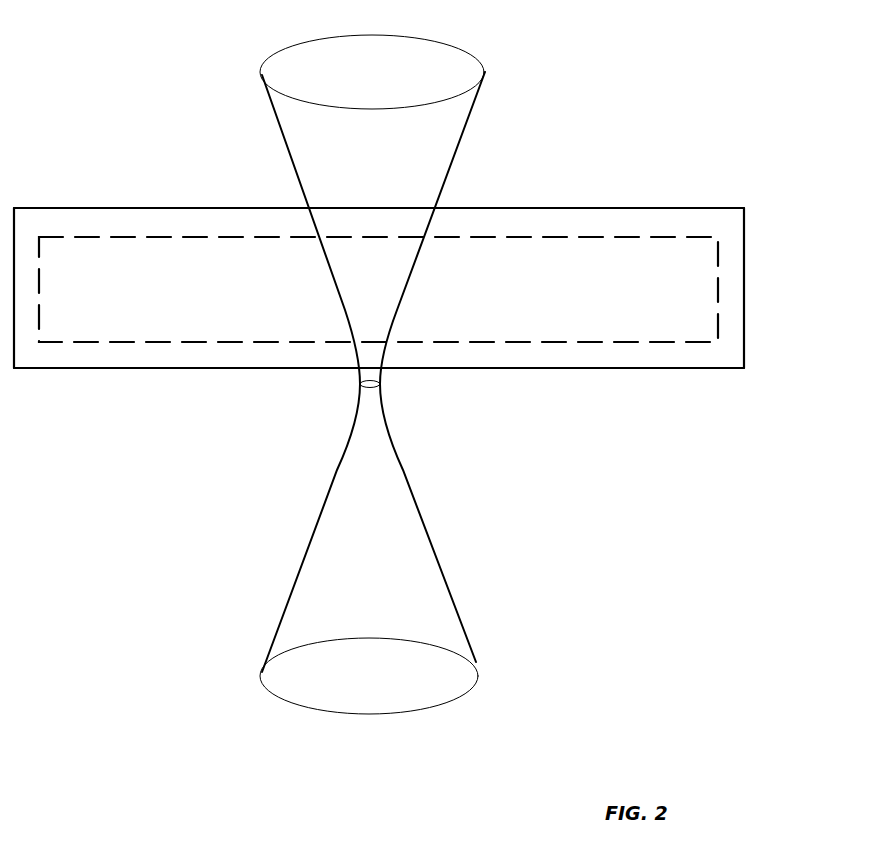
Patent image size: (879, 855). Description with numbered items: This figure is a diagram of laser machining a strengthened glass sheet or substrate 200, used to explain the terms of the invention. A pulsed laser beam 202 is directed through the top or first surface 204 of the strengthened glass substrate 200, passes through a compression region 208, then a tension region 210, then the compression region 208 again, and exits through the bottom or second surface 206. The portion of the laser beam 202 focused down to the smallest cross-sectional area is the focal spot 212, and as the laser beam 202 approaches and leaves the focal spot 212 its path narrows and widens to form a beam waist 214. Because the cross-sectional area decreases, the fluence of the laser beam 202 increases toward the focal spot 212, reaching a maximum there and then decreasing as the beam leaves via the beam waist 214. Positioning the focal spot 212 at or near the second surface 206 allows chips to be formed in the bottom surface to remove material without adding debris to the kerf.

The strengthened glass substrate 200 is at (158, 183).
The pulsed laser beam 202 is at (498, 127).
The first surface 204 is at (652, 207).
The second surface 206 is at (610, 371).
The compression region 208 is at (724, 221).
The tension region 210 is at (660, 292).
The focal spot 212 is at (360, 389).
The beam waist 214 is at (406, 385).